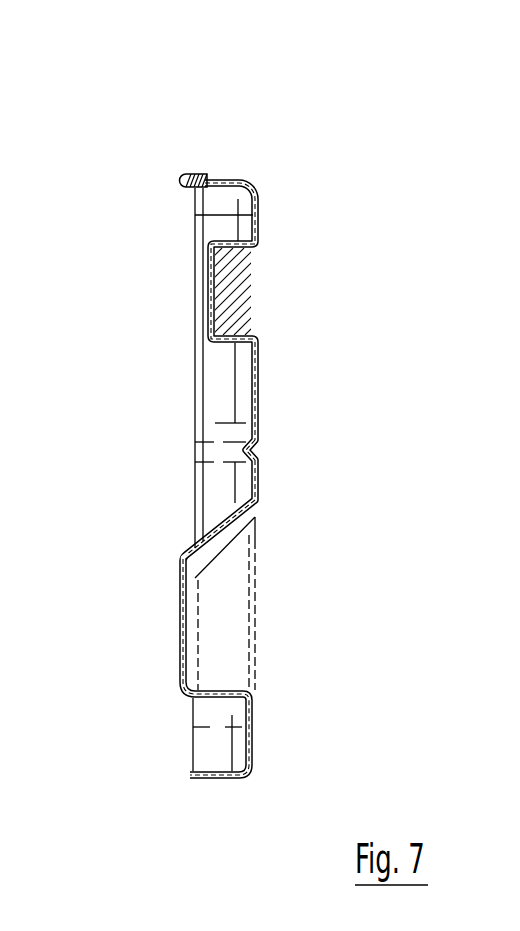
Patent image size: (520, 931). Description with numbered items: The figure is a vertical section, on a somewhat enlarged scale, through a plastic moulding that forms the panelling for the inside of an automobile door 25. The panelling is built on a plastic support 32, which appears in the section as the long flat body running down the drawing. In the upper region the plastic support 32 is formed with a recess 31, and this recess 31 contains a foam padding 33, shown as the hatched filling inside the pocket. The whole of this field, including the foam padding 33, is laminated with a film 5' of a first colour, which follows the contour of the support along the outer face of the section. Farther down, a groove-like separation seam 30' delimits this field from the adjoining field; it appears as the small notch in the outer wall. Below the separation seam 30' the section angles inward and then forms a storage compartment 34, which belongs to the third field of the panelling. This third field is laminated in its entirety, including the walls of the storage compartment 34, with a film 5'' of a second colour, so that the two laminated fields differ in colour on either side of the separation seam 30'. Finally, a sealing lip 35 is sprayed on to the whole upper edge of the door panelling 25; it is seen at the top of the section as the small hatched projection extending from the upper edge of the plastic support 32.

The panelling for the inside of an automobile door 25 is at (230, 213).
The recess 31 is at (257, 278).
The plastic support 32 is at (212, 382).
The foam padding 33 is at (257, 300).
The storage compartment 34 is at (185, 652).
The sealing lip 35 is at (186, 173).
The film of a first colour 5' is at (377, 391).
The separation seam 30' is at (345, 456).
The film of a second colour 5'' is at (313, 513).